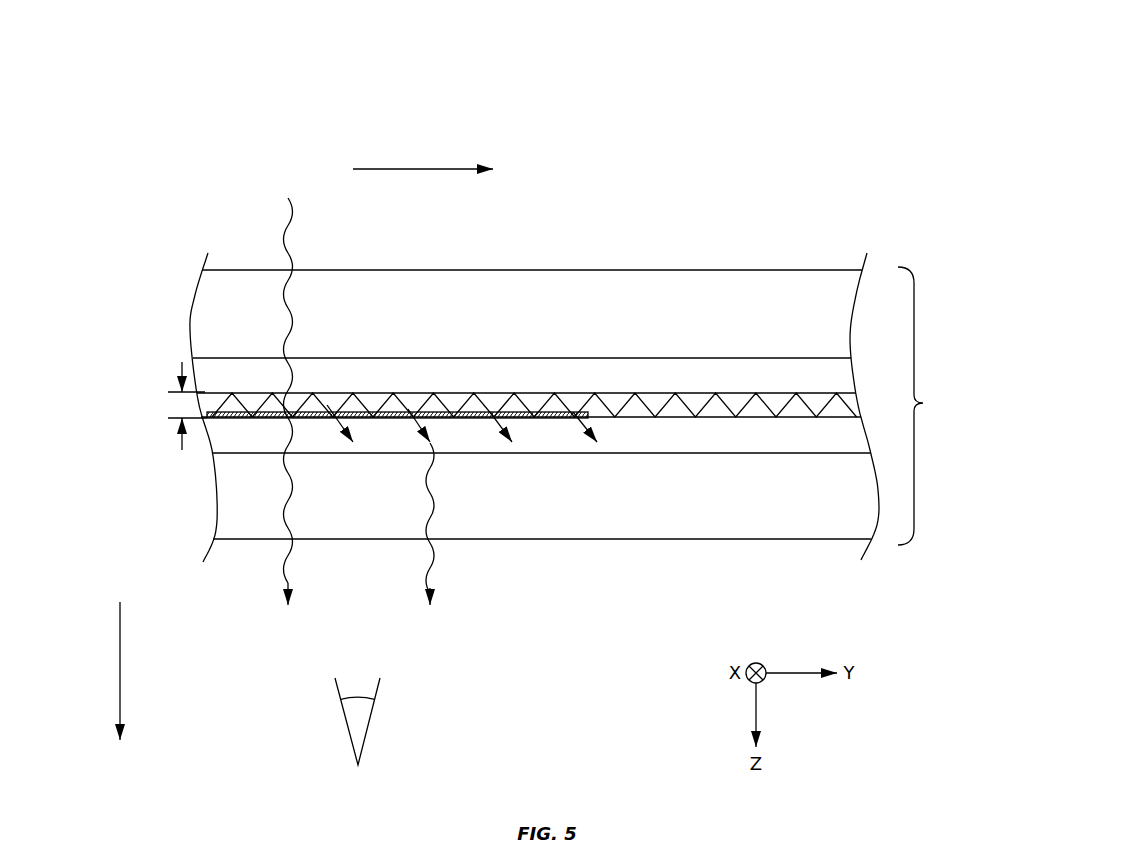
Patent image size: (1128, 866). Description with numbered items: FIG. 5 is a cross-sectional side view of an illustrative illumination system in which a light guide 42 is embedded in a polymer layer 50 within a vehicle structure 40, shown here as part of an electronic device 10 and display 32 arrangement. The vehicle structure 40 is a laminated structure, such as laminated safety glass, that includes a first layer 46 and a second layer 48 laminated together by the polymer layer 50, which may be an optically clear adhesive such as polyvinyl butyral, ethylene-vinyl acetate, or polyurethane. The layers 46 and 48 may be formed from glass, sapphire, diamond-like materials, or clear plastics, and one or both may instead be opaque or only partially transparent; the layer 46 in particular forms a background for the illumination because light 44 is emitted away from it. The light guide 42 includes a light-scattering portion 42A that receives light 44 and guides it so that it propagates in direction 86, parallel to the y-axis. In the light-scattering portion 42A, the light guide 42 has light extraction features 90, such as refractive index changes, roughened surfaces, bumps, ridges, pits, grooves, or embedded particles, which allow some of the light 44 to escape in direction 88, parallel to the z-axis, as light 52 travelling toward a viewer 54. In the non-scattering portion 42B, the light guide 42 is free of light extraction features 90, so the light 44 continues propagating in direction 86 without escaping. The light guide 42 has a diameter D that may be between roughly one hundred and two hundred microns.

The electronic device 10 is at (749, 82).
The display 32 is at (567, 228).
The vehicle structure 40 is at (922, 406).
The light guide 42 is at (333, 402).
The light-scattering portion 42A is at (267, 420).
The non-scattering portion 42B is at (778, 400).
The light 44 is at (582, 428).
The first layer 46 is at (648, 292).
The second layer 48 is at (652, 527).
The polymer layer 50 is at (762, 440).
The light ray 52 is at (280, 520).
The viewer 54 is at (371, 718).
The direction 86 is at (416, 168).
The direction 88 is at (118, 657).
The light extraction features 90 is at (393, 418).
The diameter D is at (178, 406).